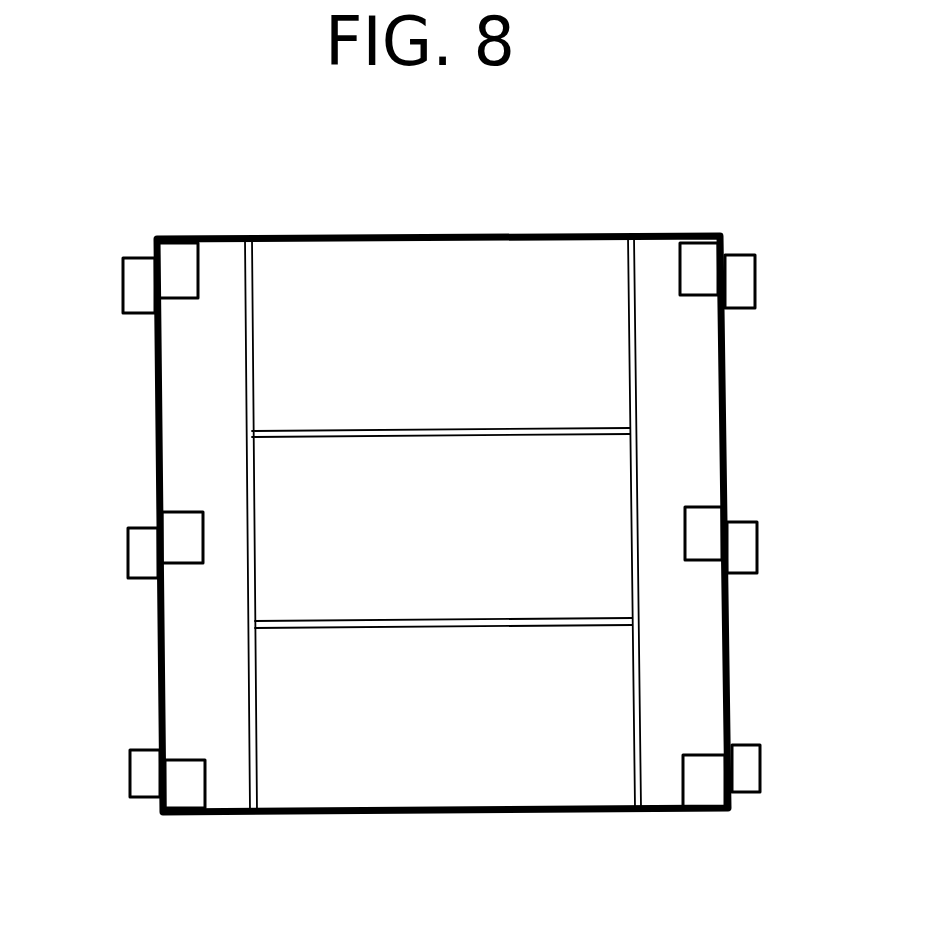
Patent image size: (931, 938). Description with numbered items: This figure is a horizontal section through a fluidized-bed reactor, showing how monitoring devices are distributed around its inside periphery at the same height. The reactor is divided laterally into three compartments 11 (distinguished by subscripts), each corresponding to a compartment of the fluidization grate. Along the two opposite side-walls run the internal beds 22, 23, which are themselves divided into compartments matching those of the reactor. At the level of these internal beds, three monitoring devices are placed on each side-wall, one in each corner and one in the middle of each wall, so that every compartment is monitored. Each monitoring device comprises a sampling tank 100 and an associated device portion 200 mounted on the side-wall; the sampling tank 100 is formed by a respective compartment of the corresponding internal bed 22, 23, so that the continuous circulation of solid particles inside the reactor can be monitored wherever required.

The compartment 11 is at (442, 526).
The internal bed 22 is at (210, 410).
The internal bed 23 is at (678, 383).
The sampling tank 100 is at (178, 255).
The monitoring device 200 is at (140, 286).